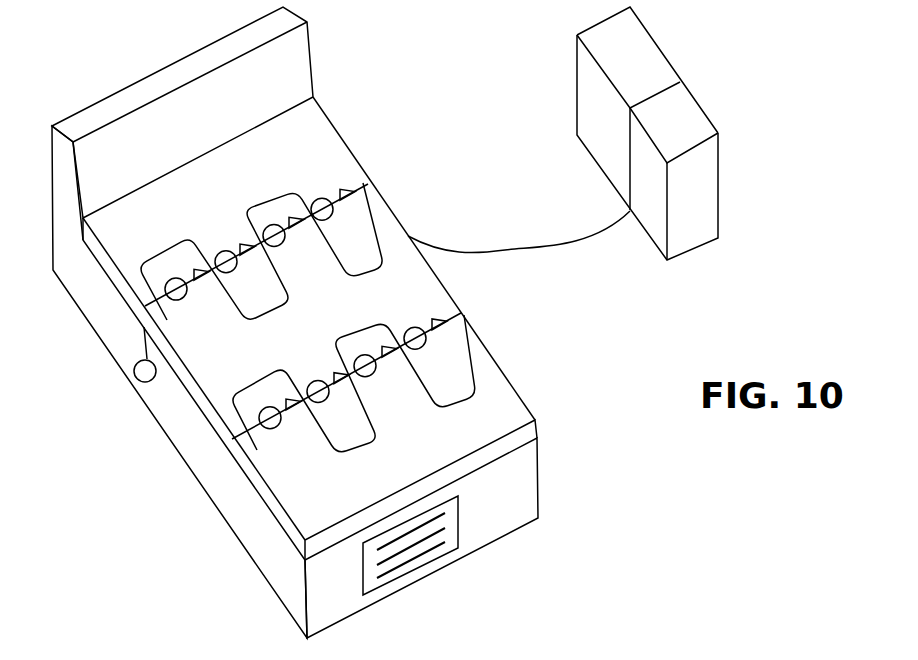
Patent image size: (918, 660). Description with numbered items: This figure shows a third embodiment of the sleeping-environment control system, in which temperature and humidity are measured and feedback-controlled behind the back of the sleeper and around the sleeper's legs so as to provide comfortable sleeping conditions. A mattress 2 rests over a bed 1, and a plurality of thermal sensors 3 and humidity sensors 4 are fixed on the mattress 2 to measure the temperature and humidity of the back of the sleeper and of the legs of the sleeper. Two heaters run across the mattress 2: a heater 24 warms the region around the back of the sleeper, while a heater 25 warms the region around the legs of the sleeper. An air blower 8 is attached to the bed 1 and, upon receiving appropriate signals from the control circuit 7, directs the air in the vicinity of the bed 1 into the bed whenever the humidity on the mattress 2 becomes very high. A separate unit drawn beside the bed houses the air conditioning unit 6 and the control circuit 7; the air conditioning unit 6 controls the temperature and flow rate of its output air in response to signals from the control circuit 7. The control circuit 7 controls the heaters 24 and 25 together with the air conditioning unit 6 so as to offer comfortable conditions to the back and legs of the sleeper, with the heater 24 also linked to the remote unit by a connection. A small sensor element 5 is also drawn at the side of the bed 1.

The bed 1 is at (512, 517).
The mattress 2 is at (527, 433).
The thermal sensors 3 is at (247, 206).
The humidity sensors 4 is at (348, 190).
The sensor 5 is at (137, 381).
The air conditioning unit 6 is at (640, 50).
The control circuit 7 is at (665, 117).
The air blower 8 is at (426, 558).
The heater 24 is at (309, 224).
The heater 25 is at (477, 347).